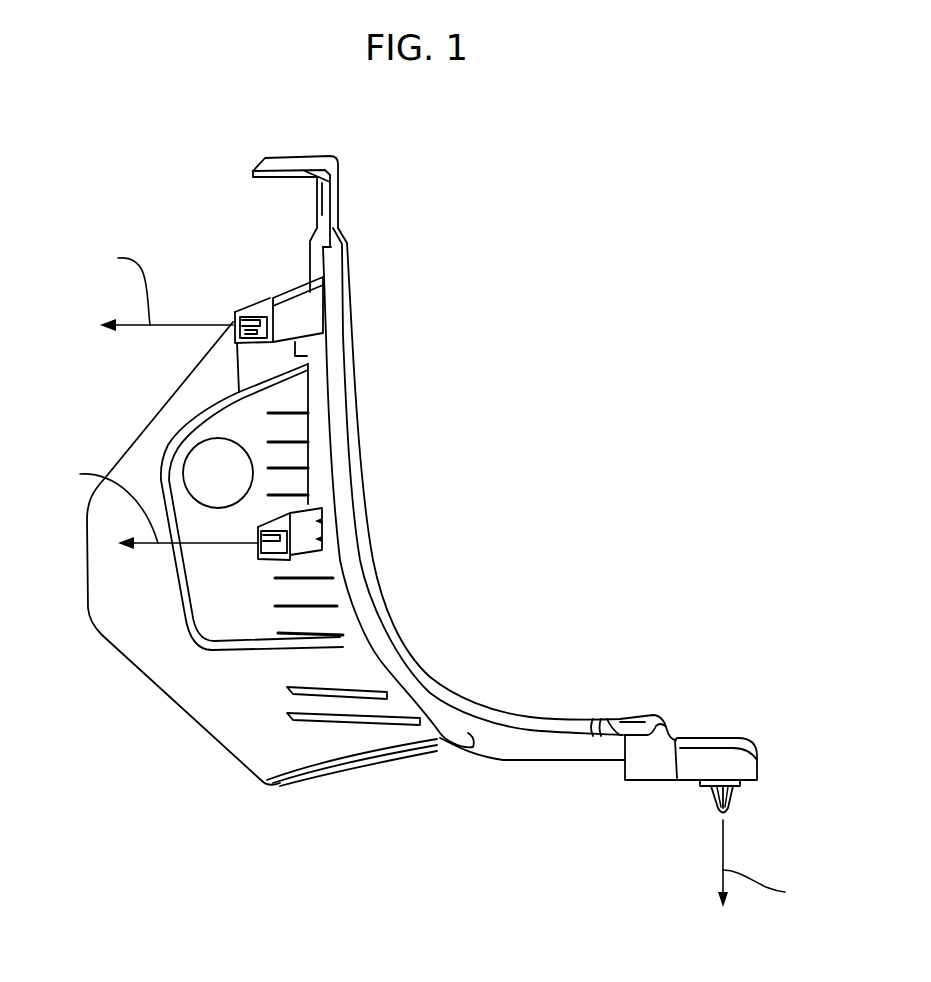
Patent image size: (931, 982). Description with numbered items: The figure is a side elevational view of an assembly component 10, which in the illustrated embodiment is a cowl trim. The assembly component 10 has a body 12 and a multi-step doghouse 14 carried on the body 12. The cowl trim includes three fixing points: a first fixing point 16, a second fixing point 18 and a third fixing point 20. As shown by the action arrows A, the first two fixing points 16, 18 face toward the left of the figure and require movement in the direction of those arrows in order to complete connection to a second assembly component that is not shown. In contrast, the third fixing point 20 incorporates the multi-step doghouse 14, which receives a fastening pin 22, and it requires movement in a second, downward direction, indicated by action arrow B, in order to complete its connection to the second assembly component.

The assembly component 10 is at (503, 225).
The body 12 is at (351, 438).
The multi-step doghouse 14 is at (729, 718).
The first fixing point 16 is at (238, 325).
The second fixing point 18 is at (258, 548).
The third fixing point 20 is at (712, 812).
The fastening pin 22 is at (734, 810).